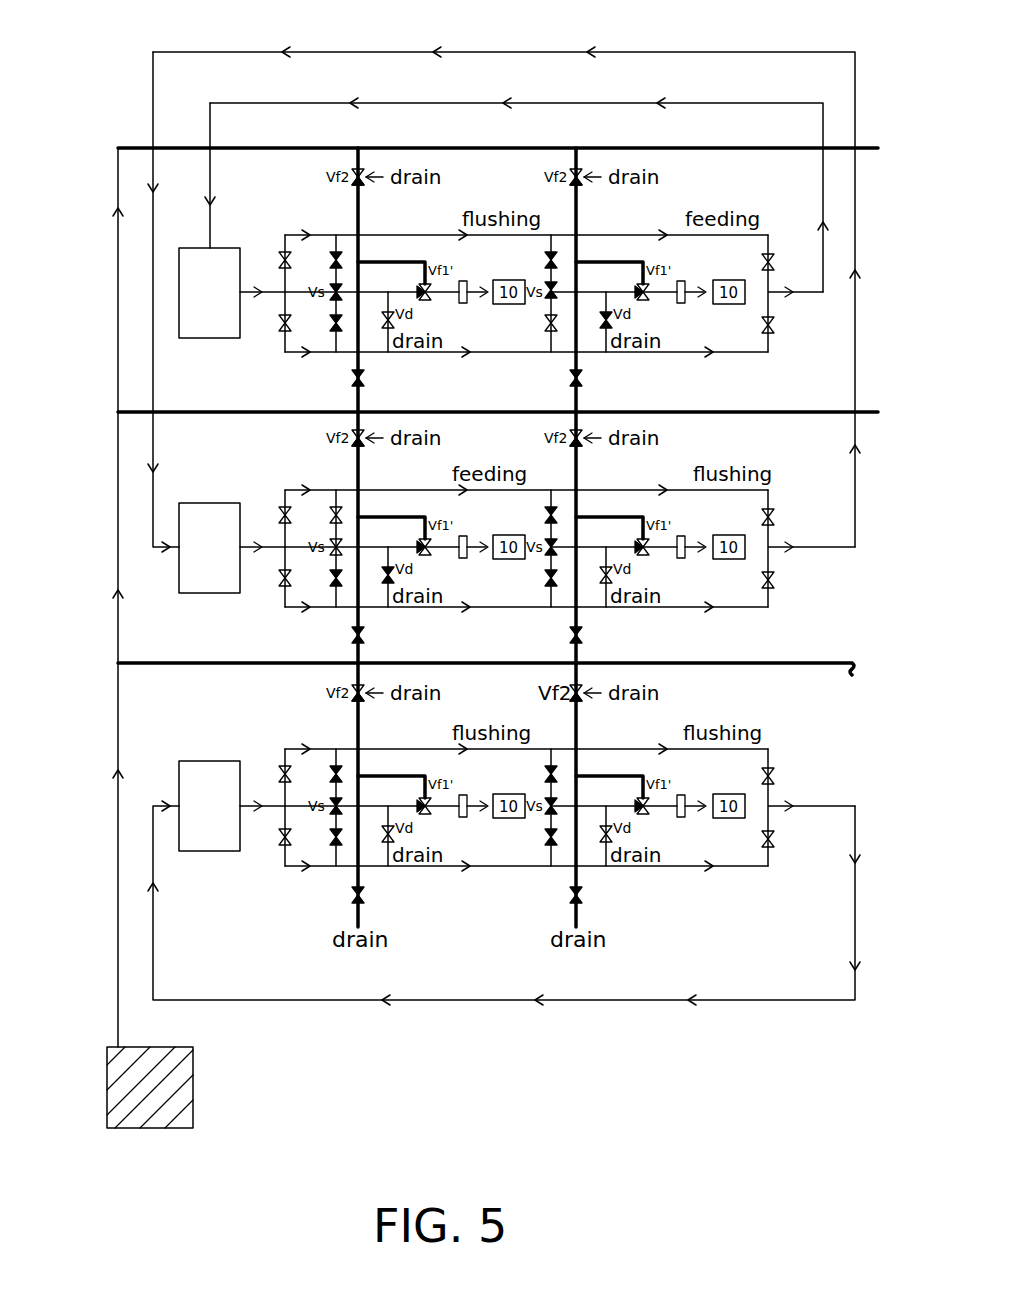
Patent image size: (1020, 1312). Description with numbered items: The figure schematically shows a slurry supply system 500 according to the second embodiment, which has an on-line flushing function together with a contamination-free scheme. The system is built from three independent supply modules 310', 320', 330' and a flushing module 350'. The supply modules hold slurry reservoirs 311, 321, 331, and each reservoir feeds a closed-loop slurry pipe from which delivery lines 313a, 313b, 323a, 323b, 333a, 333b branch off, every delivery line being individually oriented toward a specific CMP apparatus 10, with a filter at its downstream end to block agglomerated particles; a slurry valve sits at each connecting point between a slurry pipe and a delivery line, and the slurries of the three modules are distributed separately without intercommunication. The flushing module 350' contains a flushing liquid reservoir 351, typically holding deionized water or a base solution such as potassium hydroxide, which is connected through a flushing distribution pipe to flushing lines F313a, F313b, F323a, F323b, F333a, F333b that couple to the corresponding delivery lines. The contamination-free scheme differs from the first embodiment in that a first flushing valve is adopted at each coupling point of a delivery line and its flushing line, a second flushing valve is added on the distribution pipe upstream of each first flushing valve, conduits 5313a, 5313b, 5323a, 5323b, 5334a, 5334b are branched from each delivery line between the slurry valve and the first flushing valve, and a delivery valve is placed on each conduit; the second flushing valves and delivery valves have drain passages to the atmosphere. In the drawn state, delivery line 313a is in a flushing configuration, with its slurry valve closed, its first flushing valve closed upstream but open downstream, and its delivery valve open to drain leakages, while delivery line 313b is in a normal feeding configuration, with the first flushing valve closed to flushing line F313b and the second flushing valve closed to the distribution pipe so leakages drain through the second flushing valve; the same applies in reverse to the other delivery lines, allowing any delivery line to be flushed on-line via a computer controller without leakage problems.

The slurry supply system 500 is at (518, 26).
The slurry reservoir 311 is at (232, 293).
The slurry reservoir 321 is at (232, 548).
The slurry reservoir 331 is at (232, 806).
The flushing liquid reservoir 351 is at (150, 1087).
The supply module 310' is at (840, 299).
The supply module 320' is at (840, 552).
The supply module 330' is at (840, 807).
The flushing module 350' is at (434, 662).
The flushing line F313a is at (368, 262).
The flushing line F313b is at (586, 262).
The flushing line F323a is at (368, 517).
The flushing line F323b is at (586, 517).
The flushing line F333a is at (368, 776).
The flushing line F333b is at (586, 776).
The delivery line 313a is at (454, 288).
The delivery line 313b is at (672, 288).
The delivery line 323a is at (454, 543).
The delivery line 323b is at (672, 543).
The delivery line 333a is at (454, 802).
The delivery line 333b is at (672, 802).
The conduit 5313a is at (385, 298).
The conduit 5313b is at (603, 300).
The conduit 5323a is at (385, 553).
The conduit 5323b is at (601, 555).
The conduit 5334a is at (385, 812).
The conduit 5334b is at (601, 814).
The CMP apparatus 10 is at (619, 549).